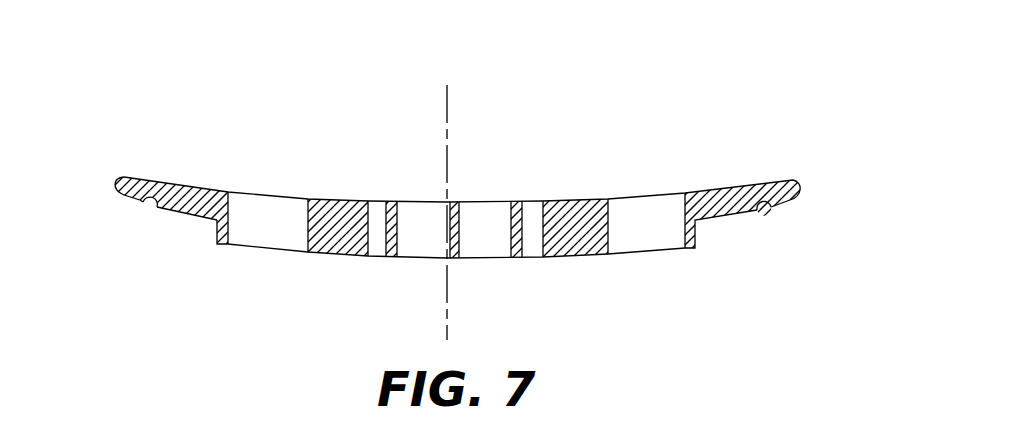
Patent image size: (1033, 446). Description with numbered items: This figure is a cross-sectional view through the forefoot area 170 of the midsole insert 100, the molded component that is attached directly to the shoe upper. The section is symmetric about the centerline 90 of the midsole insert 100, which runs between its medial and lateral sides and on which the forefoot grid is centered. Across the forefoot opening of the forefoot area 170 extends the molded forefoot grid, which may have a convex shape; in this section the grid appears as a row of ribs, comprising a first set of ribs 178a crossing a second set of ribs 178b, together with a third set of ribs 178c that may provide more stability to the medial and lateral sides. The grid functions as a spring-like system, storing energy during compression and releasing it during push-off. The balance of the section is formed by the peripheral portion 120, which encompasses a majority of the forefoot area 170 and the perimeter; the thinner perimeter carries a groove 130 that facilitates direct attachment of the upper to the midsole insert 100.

The midsole insert 100 is at (630, 100).
The centerline 90 is at (447, 130).
The peripheral portion 120 is at (178, 217).
The groove 130 is at (147, 207).
The forefoot area 170 is at (132, 95).
The first set of ribs 178a is at (393, 200).
The second set of ribs 178b is at (483, 208).
The third set of ribs 178c is at (340, 198).